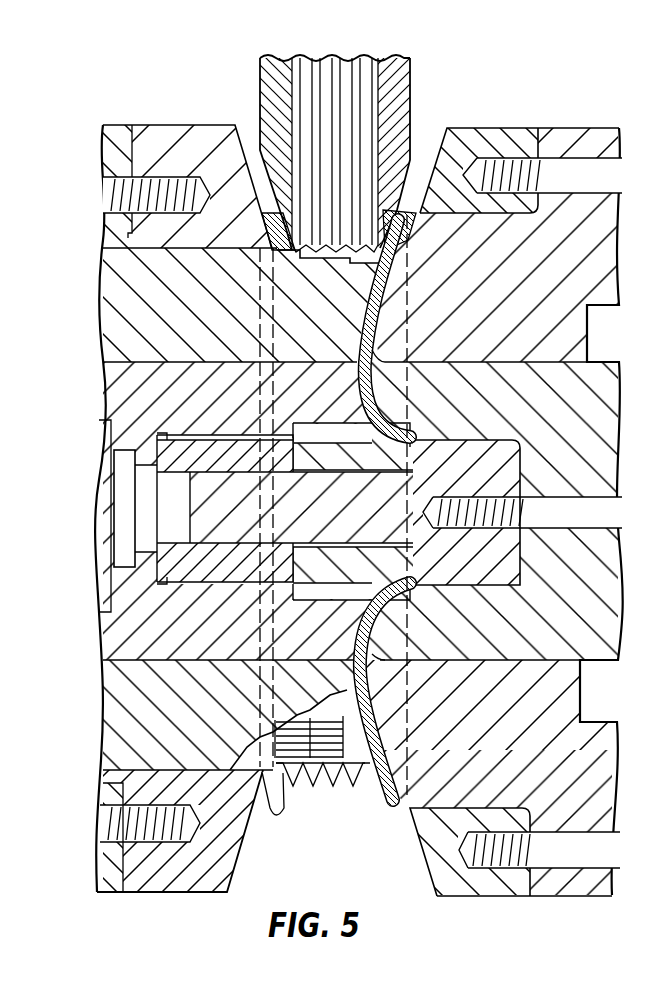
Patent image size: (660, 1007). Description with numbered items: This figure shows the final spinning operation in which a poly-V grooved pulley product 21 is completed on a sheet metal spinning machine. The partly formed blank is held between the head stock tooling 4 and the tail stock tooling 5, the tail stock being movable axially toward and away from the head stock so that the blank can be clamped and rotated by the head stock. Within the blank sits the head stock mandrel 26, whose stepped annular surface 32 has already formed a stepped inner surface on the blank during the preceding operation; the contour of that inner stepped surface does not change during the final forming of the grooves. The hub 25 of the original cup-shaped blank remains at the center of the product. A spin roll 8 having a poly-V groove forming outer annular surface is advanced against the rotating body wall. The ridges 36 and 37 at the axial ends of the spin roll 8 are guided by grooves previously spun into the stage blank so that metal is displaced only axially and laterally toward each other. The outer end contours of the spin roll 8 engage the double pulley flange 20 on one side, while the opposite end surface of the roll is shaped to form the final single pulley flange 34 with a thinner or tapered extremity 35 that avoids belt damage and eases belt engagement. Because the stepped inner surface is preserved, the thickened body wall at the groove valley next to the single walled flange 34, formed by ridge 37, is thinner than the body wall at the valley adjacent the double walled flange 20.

The head stock tooling 4 is at (120, 736).
The tail stock tooling 5 is at (563, 738).
The spin roll 8 is at (418, 80).
The double pulley flange 20 is at (403, 228).
The poly-V grooved pulley product 21 is at (391, 813).
The hub 25 is at (404, 600).
The head stock mandrel 26 is at (137, 621).
The stepped annular surface 32 is at (327, 272).
The single pulley flange 34 is at (237, 763).
The tapered extremity 35 is at (271, 797).
The spin roll ridge 36 is at (392, 248).
The spin roll ridge 37 is at (307, 255).